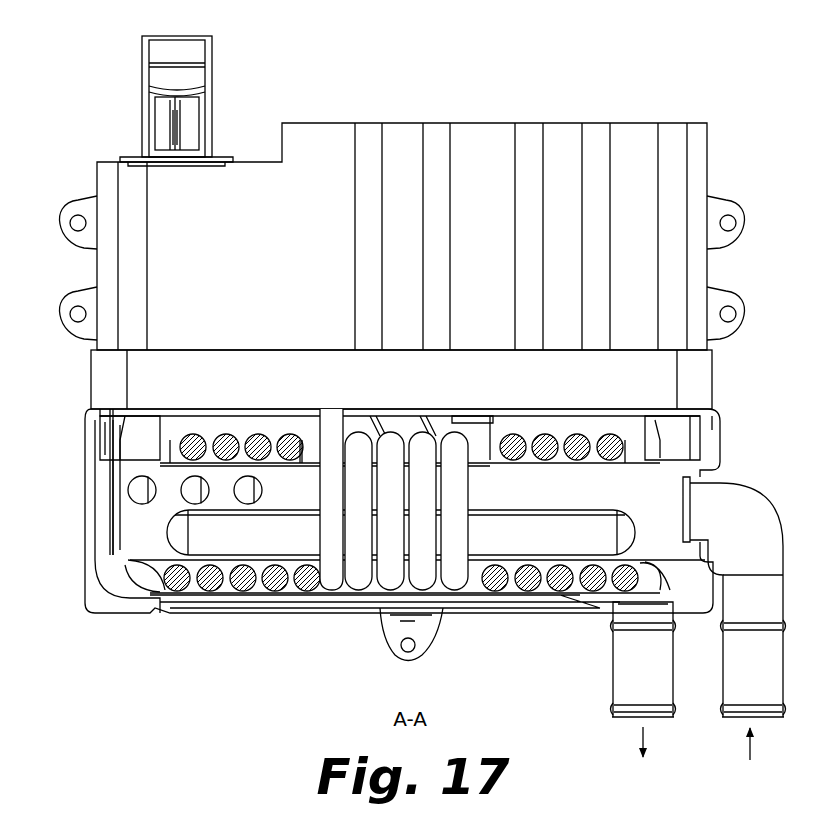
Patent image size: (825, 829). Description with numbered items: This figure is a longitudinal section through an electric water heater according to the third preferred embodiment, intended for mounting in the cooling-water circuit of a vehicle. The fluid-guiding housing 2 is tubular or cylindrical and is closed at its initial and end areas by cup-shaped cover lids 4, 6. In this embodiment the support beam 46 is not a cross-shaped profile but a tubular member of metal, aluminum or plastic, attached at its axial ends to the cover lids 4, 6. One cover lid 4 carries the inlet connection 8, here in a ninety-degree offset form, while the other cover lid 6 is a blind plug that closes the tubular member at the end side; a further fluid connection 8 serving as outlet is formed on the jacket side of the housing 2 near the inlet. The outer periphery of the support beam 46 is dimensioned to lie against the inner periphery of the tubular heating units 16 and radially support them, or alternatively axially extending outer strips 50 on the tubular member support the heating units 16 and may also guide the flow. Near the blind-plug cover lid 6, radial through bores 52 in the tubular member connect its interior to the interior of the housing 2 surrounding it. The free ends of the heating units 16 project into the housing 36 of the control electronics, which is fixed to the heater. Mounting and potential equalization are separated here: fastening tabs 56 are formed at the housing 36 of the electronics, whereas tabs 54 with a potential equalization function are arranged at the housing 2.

The housing 2 is at (193, 610).
The cover lid 4 is at (722, 445).
The cover lid 6 is at (86, 444).
The connection 8 is at (722, 714).
The tubular heating unit 16 is at (338, 588).
The housing of control electronics 36 is at (630, 123).
The support beam 46 is at (115, 540).
The outer strips 50 is at (548, 490).
The radial through bores 52 is at (185, 503).
The tabs 54 is at (432, 645).
The mounting tabs 56 is at (746, 222).